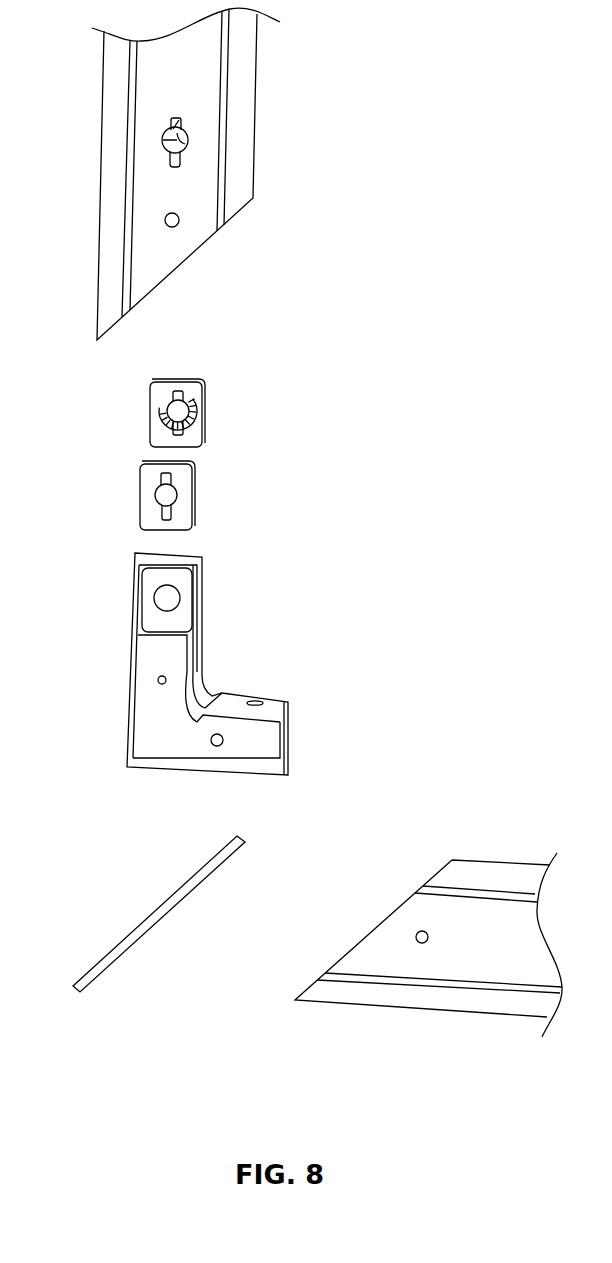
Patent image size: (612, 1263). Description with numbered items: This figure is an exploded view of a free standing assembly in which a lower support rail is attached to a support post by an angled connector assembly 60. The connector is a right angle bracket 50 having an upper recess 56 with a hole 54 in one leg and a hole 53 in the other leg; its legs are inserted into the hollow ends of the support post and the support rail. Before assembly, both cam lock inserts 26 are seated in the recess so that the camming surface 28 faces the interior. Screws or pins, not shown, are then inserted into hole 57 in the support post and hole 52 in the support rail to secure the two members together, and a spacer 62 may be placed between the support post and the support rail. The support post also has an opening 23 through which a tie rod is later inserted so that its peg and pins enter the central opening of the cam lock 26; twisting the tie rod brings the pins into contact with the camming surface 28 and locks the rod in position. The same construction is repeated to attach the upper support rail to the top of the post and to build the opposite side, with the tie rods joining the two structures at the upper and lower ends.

The opening 23 is at (162, 140).
The hole 57 is at (165, 220).
The cam lock insert 26 is at (152, 418).
The camming surface 28 is at (196, 412).
The L-shaped bracket 50 is at (125, 700).
The recess in bracket 56 is at (150, 578).
The hole in bracket 54 is at (157, 597).
The hole in bracket flange 53 is at (218, 746).
The angled connector assembly 60 is at (252, 656).
The spacer 62 is at (157, 922).
The hole 52 is at (421, 944).